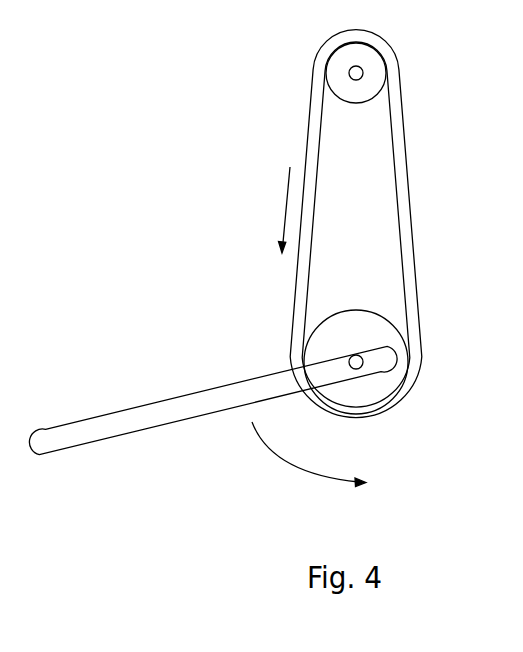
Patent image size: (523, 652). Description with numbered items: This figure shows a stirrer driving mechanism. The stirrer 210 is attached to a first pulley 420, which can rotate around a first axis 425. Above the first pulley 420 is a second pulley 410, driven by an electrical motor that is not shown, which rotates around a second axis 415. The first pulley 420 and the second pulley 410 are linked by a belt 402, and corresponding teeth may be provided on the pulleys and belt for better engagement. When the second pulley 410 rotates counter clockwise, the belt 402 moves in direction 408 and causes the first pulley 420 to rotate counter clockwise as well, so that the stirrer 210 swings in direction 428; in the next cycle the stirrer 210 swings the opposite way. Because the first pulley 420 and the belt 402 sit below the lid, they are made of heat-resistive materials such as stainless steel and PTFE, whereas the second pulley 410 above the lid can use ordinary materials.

The stirrer 210 is at (163, 415).
The belt 402 is at (308, 145).
The direction 408 is at (276, 226).
The second pulley 410 is at (345, 55).
The second axis 415 is at (357, 70).
The first pulley 420 is at (373, 388).
The first axis 425 is at (357, 360).
The direction 428 is at (330, 459).